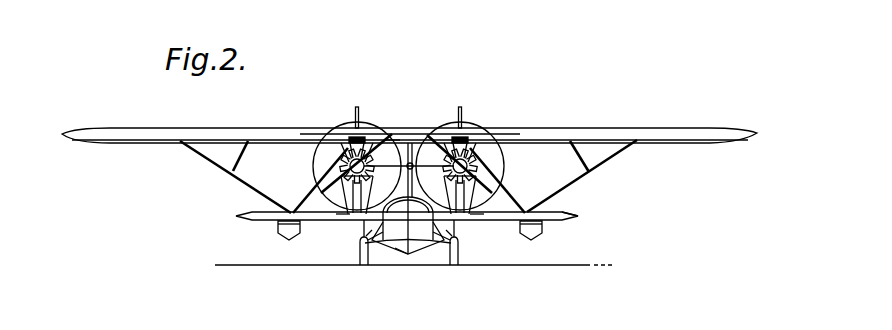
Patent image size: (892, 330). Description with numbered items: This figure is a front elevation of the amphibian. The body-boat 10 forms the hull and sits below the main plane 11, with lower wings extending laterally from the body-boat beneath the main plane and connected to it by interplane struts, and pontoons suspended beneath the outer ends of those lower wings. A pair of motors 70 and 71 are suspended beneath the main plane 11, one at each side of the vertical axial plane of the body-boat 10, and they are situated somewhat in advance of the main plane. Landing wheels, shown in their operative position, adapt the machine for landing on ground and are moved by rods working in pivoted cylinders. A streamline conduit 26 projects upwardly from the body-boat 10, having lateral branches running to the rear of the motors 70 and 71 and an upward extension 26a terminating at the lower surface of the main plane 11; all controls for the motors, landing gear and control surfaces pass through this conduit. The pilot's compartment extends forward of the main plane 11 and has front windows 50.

The body-boat 10 is at (417, 240).
The main plane 11 is at (582, 111).
The streamline conduit 26 is at (342, 189).
The upward extension 26a is at (413, 143).
The front window 50 is at (399, 245).
The motor 70 is at (347, 150).
The motor 71 is at (484, 163).